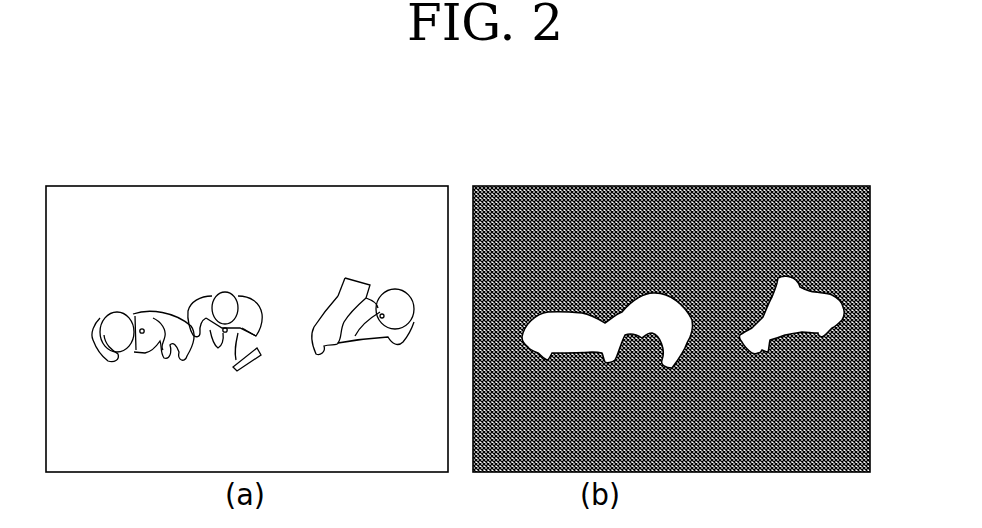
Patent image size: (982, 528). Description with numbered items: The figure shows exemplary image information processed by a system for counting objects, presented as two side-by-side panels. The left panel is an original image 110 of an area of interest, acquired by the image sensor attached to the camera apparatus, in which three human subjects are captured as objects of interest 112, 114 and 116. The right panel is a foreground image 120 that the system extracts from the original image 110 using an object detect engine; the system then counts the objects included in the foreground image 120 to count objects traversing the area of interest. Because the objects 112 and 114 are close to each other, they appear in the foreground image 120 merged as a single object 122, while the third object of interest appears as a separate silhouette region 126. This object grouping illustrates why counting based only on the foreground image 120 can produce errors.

The original image 110 is at (296, 172).
The object of interest 112 is at (134, 296).
The object of interest 114 is at (223, 272).
The object of interest 116 is at (375, 264).
The foreground image 120 is at (646, 172).
The single object 122 is at (563, 294).
The second person silhouette region 126 is at (804, 264).